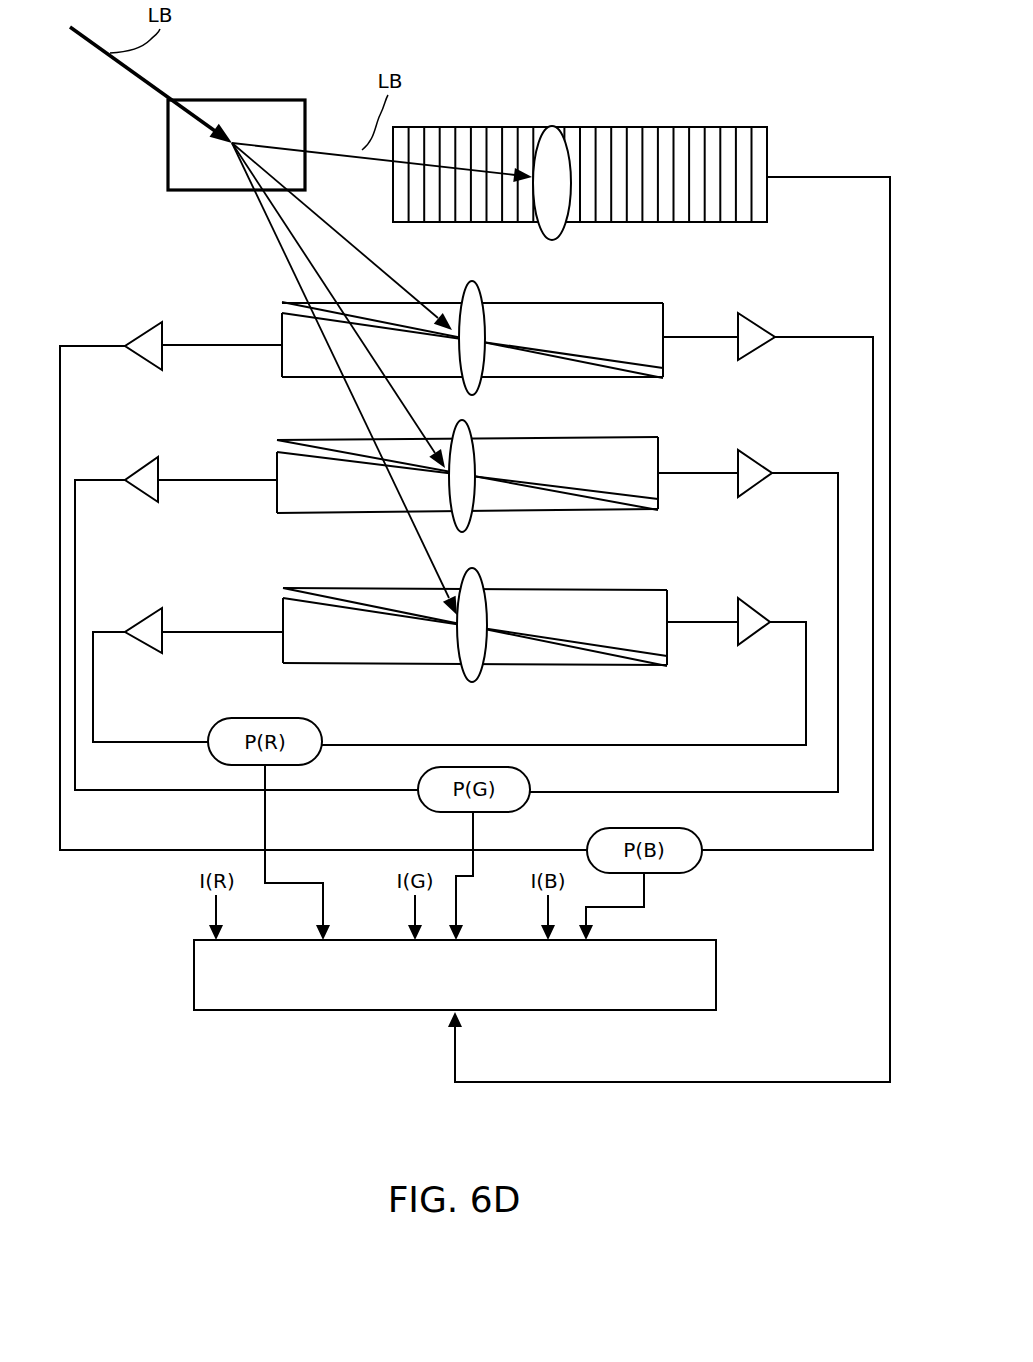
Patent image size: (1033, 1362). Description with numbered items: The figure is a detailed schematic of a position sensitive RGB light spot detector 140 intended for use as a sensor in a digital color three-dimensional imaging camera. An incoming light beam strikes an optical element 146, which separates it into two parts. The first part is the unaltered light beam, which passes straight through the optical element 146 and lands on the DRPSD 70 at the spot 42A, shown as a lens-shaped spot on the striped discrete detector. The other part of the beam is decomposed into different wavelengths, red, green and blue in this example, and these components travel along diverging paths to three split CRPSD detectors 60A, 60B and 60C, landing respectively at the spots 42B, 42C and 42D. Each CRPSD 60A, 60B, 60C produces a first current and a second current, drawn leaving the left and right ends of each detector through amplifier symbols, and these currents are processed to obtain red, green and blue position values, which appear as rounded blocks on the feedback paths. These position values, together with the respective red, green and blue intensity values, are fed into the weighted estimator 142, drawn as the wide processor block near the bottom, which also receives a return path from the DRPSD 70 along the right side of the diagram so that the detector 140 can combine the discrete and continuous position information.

The position sensitive RGB light spot detector 140 is at (153, 990).
The optical element 146 is at (272, 98).
The DRPSD 70 is at (767, 222).
The landing location on DRPSD 42A is at (548, 127).
The landing location on first CRPSD 42B is at (475, 395).
The landing location on second CRPSD 42C is at (462, 532).
The landing location on third CRPSD 42D is at (475, 682).
The split CRPSD detector 60A is at (595, 303).
The split CRPSD detector 60B is at (618, 432).
The split CRPSD detector 60C is at (603, 588).
The weighted estimator 142 is at (716, 977).